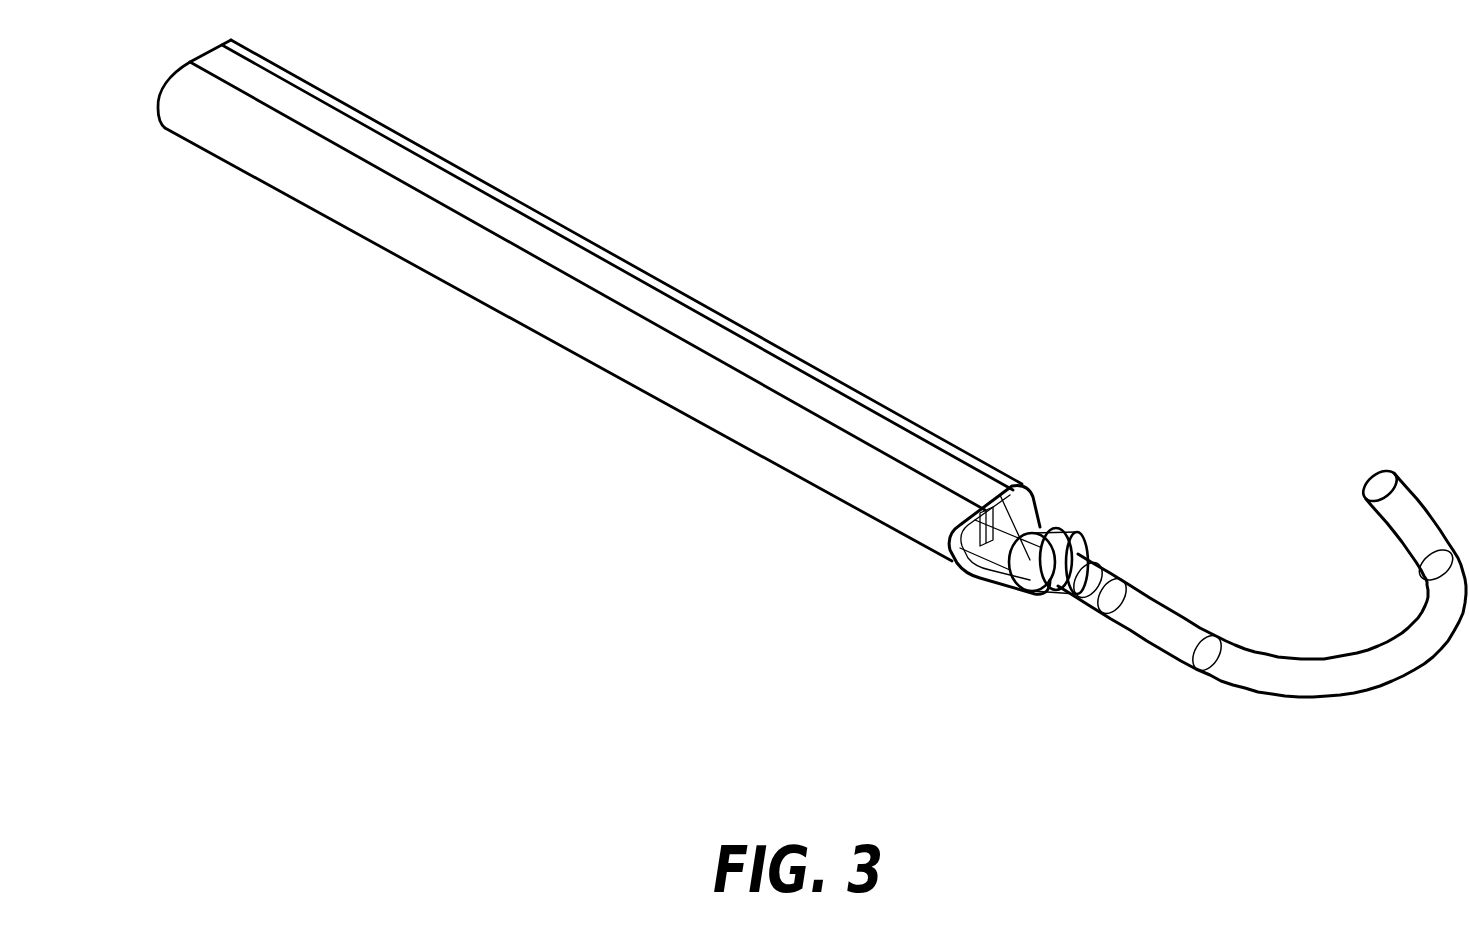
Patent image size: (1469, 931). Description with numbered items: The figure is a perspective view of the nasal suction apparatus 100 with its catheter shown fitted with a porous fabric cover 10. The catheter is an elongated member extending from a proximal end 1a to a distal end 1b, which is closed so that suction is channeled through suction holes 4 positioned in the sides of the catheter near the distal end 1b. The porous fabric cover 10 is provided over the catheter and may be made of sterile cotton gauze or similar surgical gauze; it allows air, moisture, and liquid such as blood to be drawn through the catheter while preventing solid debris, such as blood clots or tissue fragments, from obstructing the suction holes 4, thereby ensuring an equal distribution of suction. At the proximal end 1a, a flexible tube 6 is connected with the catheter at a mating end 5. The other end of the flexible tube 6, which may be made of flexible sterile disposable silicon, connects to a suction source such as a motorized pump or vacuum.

The nasal suction apparatus 100 is at (551, 490).
The suction holes 4 is at (338, 75).
The porous fabric cover 10 is at (480, 282).
The distal end 1b is at (190, 153).
The proximal end 1a is at (988, 602).
The mating end 5 is at (1110, 562).
The flexible tube 6 is at (1246, 696).